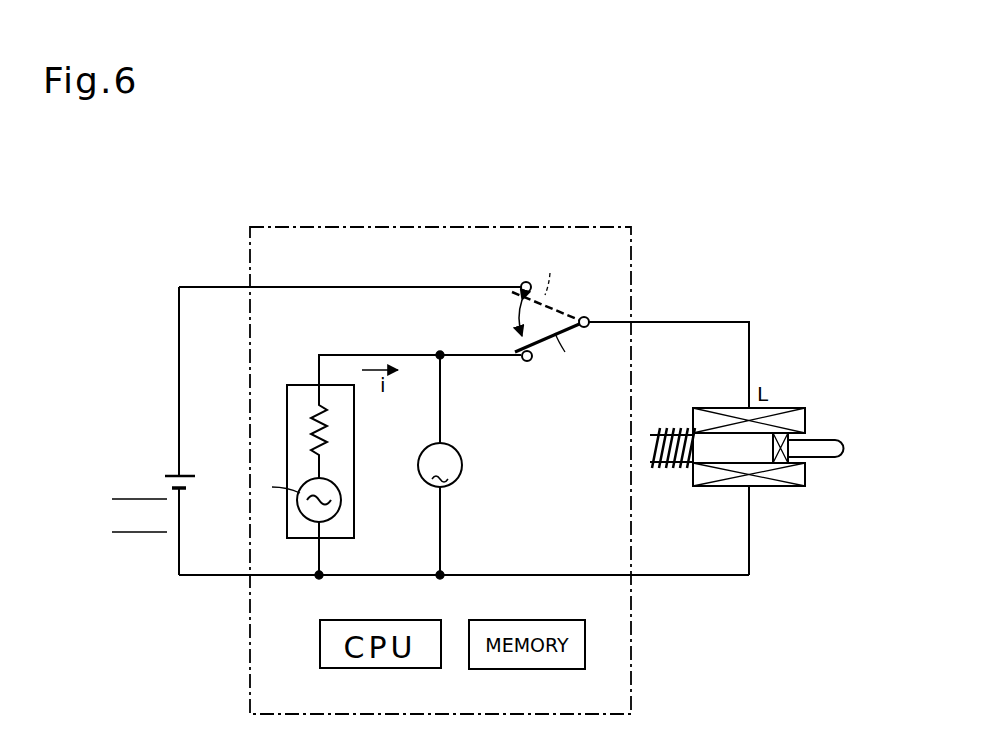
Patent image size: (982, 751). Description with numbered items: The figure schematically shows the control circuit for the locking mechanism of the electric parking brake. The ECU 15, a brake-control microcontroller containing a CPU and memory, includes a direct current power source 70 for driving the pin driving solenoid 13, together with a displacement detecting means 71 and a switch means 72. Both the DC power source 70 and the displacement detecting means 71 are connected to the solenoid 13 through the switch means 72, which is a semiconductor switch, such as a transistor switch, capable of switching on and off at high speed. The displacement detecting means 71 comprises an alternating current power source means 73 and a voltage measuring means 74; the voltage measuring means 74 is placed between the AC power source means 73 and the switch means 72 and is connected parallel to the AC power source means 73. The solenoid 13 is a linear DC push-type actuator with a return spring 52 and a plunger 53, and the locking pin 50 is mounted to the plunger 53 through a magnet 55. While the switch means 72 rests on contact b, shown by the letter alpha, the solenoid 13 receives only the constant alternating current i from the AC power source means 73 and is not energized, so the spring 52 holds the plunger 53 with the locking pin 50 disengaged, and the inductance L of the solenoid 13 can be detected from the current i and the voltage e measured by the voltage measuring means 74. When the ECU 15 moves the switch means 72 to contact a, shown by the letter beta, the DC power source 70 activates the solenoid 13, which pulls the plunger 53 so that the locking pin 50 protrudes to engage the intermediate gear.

The ECU 15 is at (531, 226).
The direct current power source 70 is at (172, 474).
The displacement detecting means 71 is at (325, 344).
The switch means 72 is at (567, 294).
The alternating current power source means 73 is at (289, 384).
The voltage measuring means 74 is at (462, 458).
The pin driving solenoid 13 is at (778, 420).
The locking pin 50 is at (820, 445).
The return spring 52 is at (665, 430).
The plunger 53 is at (715, 455).
The magnet 55 is at (790, 455).